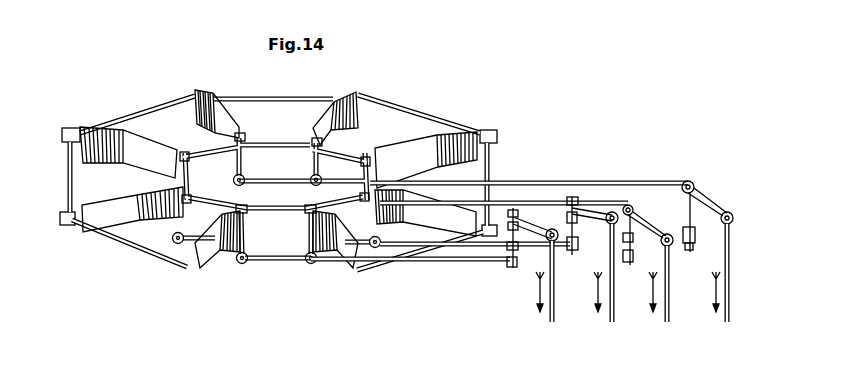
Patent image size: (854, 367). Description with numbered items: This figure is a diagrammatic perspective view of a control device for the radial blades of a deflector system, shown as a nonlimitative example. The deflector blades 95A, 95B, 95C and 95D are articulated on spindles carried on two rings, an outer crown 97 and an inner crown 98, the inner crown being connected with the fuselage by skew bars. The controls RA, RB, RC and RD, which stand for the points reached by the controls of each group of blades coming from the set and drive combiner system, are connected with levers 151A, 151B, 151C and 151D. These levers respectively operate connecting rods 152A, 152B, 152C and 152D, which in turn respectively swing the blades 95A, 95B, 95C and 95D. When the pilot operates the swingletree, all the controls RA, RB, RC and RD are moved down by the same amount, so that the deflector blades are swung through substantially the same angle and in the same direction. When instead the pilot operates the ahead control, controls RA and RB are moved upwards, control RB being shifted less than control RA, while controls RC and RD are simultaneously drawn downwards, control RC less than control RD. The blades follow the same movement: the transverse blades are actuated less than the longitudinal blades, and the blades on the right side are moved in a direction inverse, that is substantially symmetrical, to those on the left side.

The deflector blade 95A is at (207, 253).
The deflector blade 95B is at (102, 217).
The deflector blade 95C is at (125, 150).
The deflector blade 95D is at (190, 135).
The outer crown 97 is at (242, 103).
The inner crown 98 is at (282, 143).
The lever 151A is at (540, 237).
The lever 151B is at (593, 220).
The lever 151C is at (645, 237).
The lever 151D is at (713, 210).
The connecting rod 152A is at (407, 262).
The connecting rod 152B is at (482, 247).
The connecting rod 152C is at (495, 200).
The connecting rod 152D is at (547, 182).
The control RA is at (549, 310).
The control RB is at (605, 310).
The control RC is at (661, 310).
The control RD is at (723, 310).